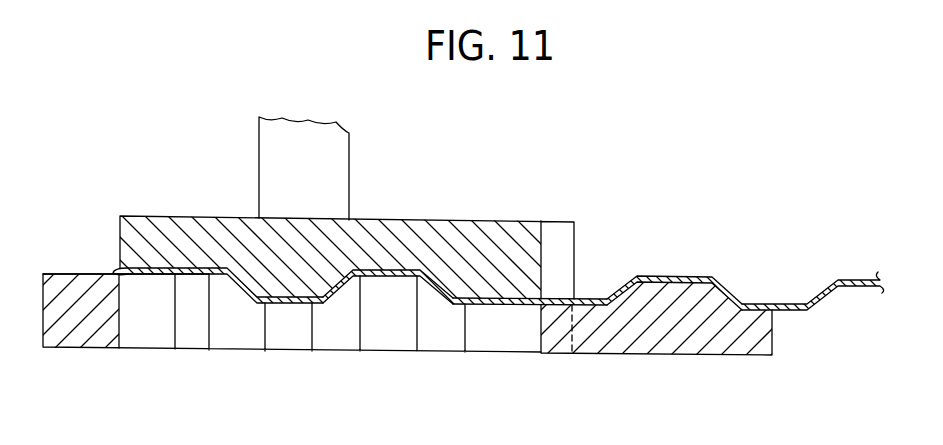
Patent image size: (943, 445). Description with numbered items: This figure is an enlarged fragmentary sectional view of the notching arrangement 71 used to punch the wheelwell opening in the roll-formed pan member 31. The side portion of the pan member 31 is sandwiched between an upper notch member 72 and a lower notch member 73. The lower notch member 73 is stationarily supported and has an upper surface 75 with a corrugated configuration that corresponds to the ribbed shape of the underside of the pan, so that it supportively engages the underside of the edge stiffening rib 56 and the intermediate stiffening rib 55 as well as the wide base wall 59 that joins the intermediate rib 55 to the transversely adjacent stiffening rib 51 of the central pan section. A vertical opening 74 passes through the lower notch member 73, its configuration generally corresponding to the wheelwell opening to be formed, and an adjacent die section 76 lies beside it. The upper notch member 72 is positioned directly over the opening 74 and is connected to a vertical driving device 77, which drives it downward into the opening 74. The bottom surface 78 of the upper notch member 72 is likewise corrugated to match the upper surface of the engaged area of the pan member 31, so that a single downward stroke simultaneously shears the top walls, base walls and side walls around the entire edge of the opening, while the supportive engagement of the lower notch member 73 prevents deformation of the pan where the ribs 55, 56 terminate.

The notching arrangement 71 is at (140, 113).
The upper notch member 72 is at (188, 225).
The vertical driving device 77 is at (337, 152).
The intermediate stiffening rib 55 is at (395, 271).
The edge stiffening rib 56 is at (158, 268).
The bottom surface of upper member 78 is at (118, 268).
The upper surface of lower member 75 is at (68, 272).
The opening 74 is at (122, 325).
The lower die section 76 is at (185, 335).
The base wall 59 is at (588, 300).
The stiffening rib 51 is at (666, 278).
The lower notch member 73 is at (640, 345).
The pan member 31 is at (847, 279).